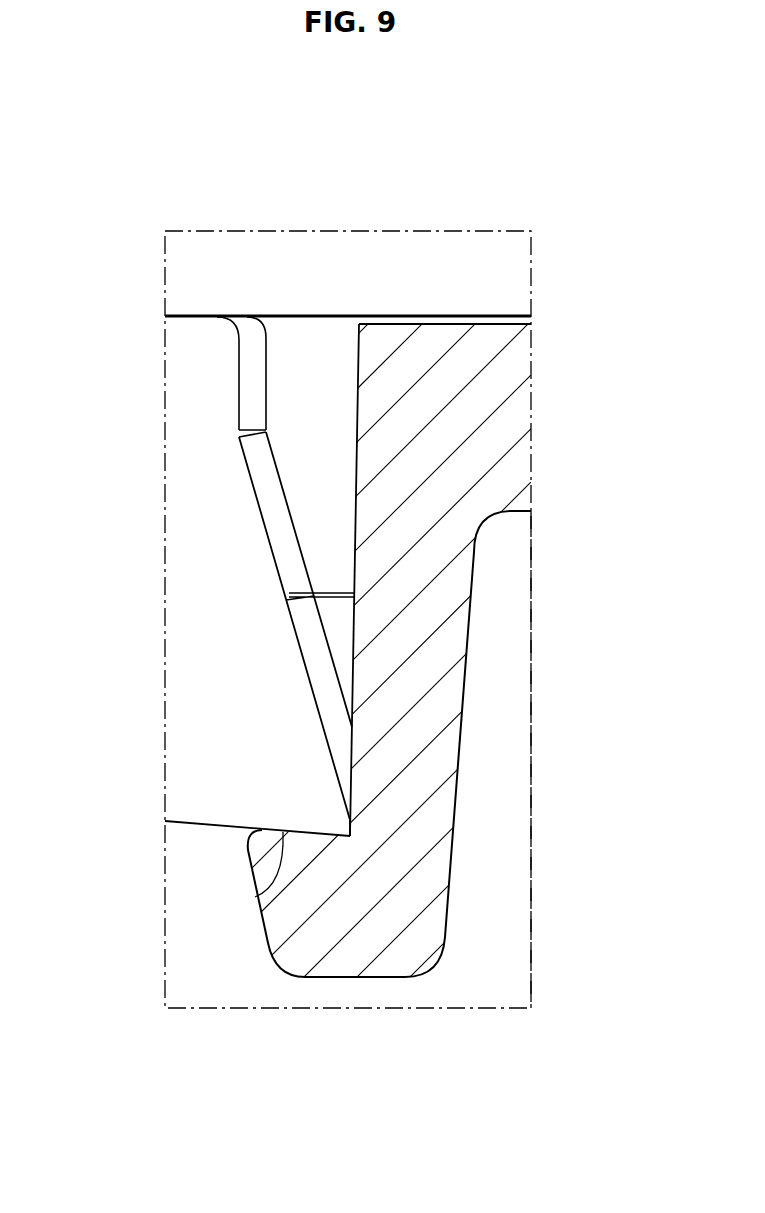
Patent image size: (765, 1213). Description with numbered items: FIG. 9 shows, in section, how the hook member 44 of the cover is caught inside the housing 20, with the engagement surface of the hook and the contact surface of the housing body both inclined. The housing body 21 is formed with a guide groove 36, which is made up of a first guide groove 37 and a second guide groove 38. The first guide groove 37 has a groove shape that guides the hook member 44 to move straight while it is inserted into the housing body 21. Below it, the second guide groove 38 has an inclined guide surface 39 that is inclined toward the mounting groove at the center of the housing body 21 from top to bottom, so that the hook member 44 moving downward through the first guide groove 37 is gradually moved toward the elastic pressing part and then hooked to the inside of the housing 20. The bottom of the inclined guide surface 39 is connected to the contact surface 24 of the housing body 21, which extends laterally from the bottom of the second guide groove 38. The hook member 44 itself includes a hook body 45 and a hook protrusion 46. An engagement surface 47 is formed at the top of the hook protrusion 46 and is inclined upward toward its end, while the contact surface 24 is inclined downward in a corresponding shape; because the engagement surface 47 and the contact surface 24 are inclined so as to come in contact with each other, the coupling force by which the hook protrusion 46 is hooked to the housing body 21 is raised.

The housing 20 is at (226, 268).
The housing body 21 is at (192, 305).
The contact surface 24 is at (218, 826).
The guide groove 36 is at (320, 352).
The first guide groove 37 is at (275, 352).
The second guide groove 38 is at (293, 483).
The inclined guide surface 39 is at (282, 530).
The hook member 44 is at (475, 754).
The hook body 45 is at (433, 628).
The hook protrusion 46 is at (318, 928).
The engagement surface 47 is at (255, 897).